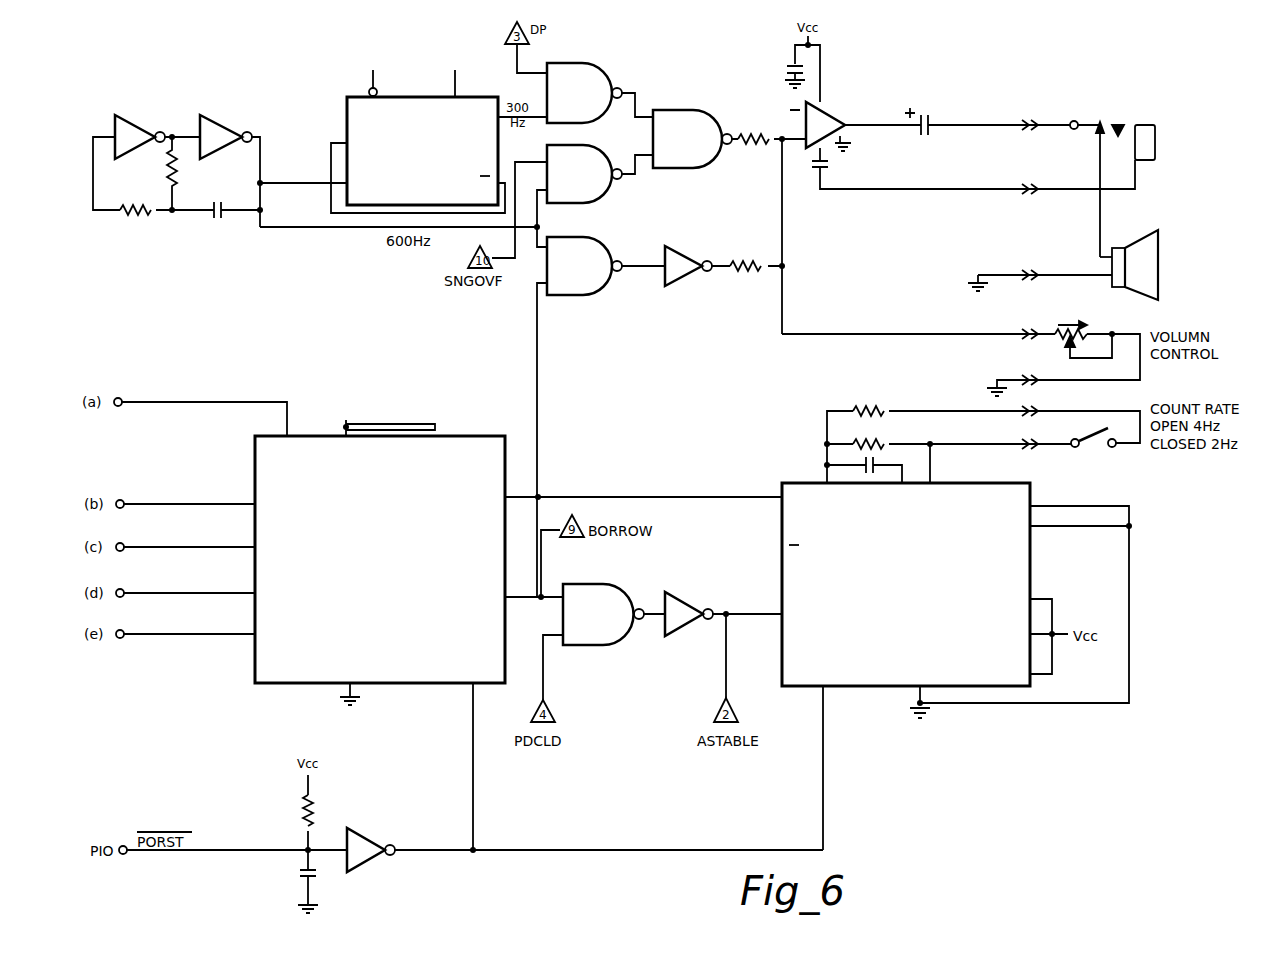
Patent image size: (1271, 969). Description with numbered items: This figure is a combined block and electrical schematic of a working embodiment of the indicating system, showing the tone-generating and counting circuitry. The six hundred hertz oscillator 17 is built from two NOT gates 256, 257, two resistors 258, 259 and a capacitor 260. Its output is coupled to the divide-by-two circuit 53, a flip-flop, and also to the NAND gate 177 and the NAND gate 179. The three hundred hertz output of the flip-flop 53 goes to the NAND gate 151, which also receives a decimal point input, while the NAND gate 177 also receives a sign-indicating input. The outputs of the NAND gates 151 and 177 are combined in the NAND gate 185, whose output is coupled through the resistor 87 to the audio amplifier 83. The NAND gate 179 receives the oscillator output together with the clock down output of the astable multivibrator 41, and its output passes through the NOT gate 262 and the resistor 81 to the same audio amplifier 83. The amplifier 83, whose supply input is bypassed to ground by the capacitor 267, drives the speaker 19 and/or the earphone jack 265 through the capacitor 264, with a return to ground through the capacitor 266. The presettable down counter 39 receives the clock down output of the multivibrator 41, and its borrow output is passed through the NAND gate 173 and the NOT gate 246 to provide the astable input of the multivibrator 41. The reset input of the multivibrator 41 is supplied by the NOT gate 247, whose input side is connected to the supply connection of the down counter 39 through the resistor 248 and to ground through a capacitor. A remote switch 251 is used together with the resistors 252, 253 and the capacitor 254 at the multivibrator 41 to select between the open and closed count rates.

The 600 Hz oscillator 17 is at (172, 102).
The NOT gate 256 is at (118, 114).
The NOT gate 257 is at (214, 112).
The resistor 258 is at (140, 218).
The resistor 259 is at (188, 170).
The capacitor 260 is at (228, 222).
The divide-by-two circuit 53 is at (347, 97).
The NAND gate 151 is at (585, 63).
The NAND gate 185 is at (673, 110).
The NAND gate 177 is at (604, 196).
The NAND gate 179 is at (606, 290).
The NOT gate 262 is at (692, 277).
The resistor 87 is at (758, 134).
The resistor 81 is at (748, 262).
The audio amplifier 83 is at (826, 108).
The bypass capacitor 267 is at (793, 63).
The capacitor 264 is at (927, 117).
The capacitor 266 is at (828, 168).
The earphone jack 265 is at (1163, 80).
The speaker 19 is at (1160, 246).
The down counter 39 is at (372, 430).
The NAND gate 173 is at (593, 645).
The NOT gate 246 is at (718, 573).
The astable multivibrator 41 is at (790, 483).
The resistor 252 is at (912, 366).
The resistor 253 is at (858, 441).
The capacitor 254 is at (906, 469).
The remote switch 251 is at (1116, 449).
The resistor 248 is at (302, 800).
The NOT gate 247 is at (366, 832).